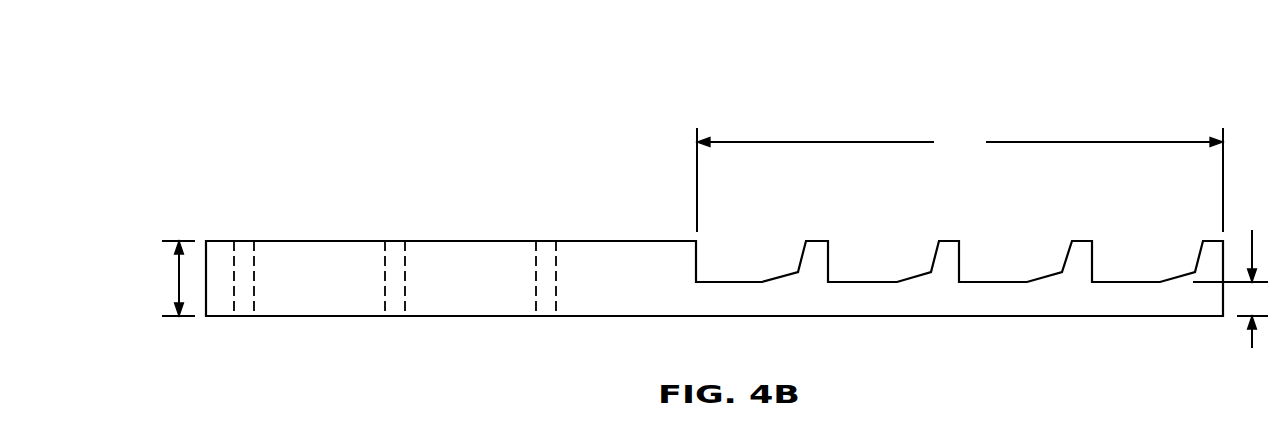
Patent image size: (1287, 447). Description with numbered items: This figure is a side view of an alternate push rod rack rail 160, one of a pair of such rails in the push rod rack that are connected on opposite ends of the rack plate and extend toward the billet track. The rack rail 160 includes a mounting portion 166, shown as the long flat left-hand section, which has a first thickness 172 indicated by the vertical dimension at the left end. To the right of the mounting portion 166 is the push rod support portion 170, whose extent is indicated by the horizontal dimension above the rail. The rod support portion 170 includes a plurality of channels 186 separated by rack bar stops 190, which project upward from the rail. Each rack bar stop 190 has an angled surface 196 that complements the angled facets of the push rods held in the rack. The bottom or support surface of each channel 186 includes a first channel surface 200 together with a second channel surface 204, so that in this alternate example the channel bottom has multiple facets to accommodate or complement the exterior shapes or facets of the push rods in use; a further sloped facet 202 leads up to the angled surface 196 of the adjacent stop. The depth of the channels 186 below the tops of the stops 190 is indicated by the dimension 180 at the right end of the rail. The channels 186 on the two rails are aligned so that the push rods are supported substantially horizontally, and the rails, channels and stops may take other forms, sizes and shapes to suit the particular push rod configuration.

The rod rack rail 160 is at (659, 125).
The mounting portion 166 is at (471, 218).
The push rod support portion 170 is at (960, 180).
The first thickness 172 is at (178, 278).
The recess depth 180 is at (1233, 289).
The channel 186 is at (850, 258).
The rack bar stop 190 is at (1084, 230).
The angled surface 196 is at (803, 258).
The first channel surface 200 is at (988, 282).
The ramp surface 202 is at (1027, 282).
The second channel surface 204 is at (731, 266).